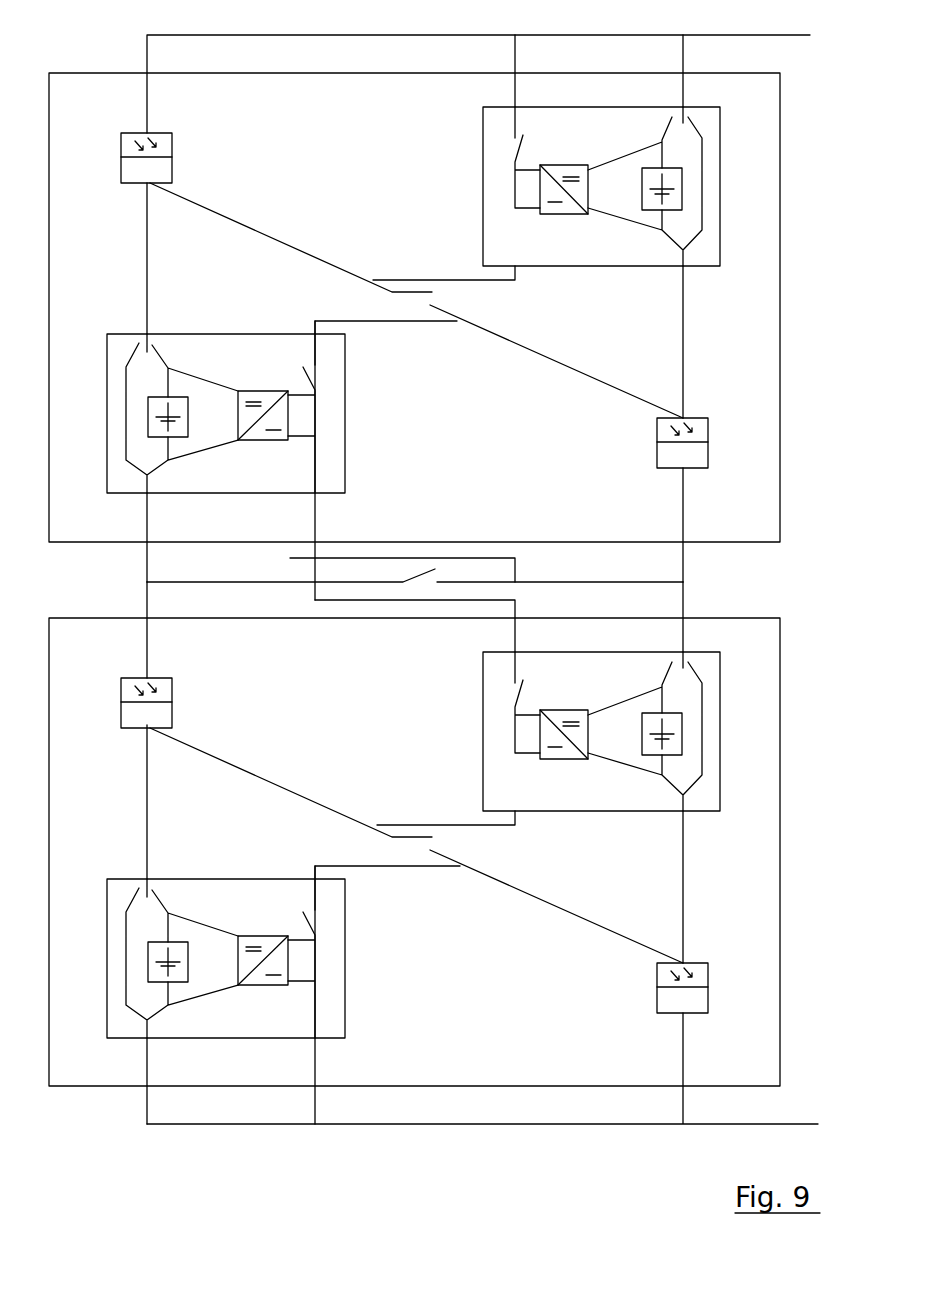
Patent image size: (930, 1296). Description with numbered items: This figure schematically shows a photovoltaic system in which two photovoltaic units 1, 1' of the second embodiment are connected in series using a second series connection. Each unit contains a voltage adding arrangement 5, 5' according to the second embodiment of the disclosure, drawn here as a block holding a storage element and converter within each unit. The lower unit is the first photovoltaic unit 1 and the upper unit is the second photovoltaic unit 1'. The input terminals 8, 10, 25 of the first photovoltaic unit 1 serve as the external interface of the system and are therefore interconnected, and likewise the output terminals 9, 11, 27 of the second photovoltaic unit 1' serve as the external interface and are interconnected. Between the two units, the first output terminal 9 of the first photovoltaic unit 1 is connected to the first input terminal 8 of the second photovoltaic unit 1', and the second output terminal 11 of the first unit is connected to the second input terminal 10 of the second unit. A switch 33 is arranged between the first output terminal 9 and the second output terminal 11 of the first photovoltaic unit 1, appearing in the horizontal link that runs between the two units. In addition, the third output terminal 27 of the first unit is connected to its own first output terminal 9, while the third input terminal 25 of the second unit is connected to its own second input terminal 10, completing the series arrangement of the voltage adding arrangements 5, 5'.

The second photovoltaic unit 1' is at (414, 278).
The first photovoltaic unit 1 is at (414, 824).
The voltage adding arrangement 5 is at (252, 952).
The voltage adding arrangement 5' is at (570, 459).
The first input terminal 8 is at (147, 582).
The first output terminal 9 is at (147, 37).
The second input terminal 10 is at (683, 582).
The second output terminal 11 is at (683, 37).
The third input terminal 25 is at (316, 1124).
The third output terminal 27 is at (515, 37).
The switch 33 is at (417, 576).